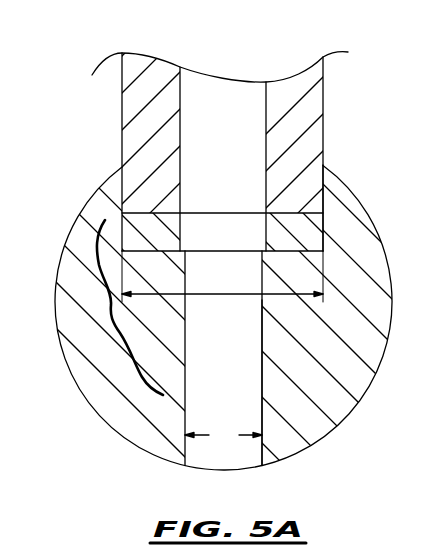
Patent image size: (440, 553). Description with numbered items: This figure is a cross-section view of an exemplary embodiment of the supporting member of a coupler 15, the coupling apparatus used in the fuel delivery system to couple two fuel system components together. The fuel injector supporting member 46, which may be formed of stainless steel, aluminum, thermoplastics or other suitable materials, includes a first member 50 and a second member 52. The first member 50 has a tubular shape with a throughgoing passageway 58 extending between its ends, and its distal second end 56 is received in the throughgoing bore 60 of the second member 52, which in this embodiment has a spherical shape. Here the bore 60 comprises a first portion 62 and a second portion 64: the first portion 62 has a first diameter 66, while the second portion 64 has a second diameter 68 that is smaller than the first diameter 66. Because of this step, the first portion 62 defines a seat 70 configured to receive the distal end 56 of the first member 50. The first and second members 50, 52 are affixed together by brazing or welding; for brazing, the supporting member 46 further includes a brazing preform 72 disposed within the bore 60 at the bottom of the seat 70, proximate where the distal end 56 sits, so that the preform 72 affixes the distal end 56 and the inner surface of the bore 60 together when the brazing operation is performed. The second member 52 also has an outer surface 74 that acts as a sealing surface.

The coupler 15 is at (251, 59).
The fuel injector supporting member 46 is at (72, 135).
The first member 50 is at (225, 76).
The second member 52 is at (372, 212).
The second end 56 is at (325, 198).
The throughgoing passageway 58 is at (209, 135).
The throughgoing bore 60 is at (119, 307).
The first portion 62 is at (325, 180).
The second portion 64 is at (261, 353).
The first diameter 66 is at (218, 296).
The second diameter 68 is at (223, 435).
The seat 70 is at (324, 237).
The brazing preform 72 is at (213, 213).
The outer surface 74 is at (78, 215).